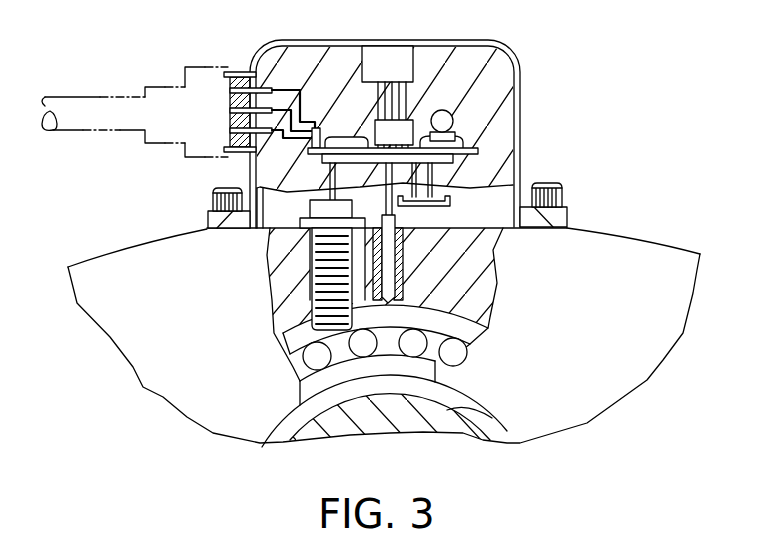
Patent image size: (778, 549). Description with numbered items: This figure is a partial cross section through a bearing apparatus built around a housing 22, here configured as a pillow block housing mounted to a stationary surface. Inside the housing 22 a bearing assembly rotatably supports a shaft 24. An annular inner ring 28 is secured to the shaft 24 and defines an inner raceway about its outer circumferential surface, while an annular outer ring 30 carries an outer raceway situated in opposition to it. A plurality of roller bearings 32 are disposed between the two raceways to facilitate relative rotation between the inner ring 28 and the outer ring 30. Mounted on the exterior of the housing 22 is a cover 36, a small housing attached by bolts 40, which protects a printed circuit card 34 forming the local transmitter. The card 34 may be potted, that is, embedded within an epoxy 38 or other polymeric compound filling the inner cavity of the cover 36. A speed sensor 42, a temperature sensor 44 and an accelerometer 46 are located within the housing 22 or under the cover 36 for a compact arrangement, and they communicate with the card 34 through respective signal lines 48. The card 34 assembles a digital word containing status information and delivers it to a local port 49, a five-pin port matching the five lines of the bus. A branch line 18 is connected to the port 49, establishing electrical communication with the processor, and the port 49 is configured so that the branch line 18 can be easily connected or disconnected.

The branch line 18 is at (80, 103).
The housing 22 is at (646, 240).
The shaft 24 is at (453, 407).
The inner ring 28 is at (430, 372).
The outer ring 30 is at (290, 338).
The roller bearings 32 is at (313, 357).
The printed circuit card 34 is at (466, 110).
The cover 36 is at (467, 42).
The epoxy 38 is at (261, 245).
The bolts 40 is at (212, 201).
The speed sensor 42 is at (283, 290).
The temperature sensor 44 is at (405, 260).
The accelerometer 46 is at (383, 46).
The signal lines 48 is at (430, 206).
The local port 49 is at (232, 68).